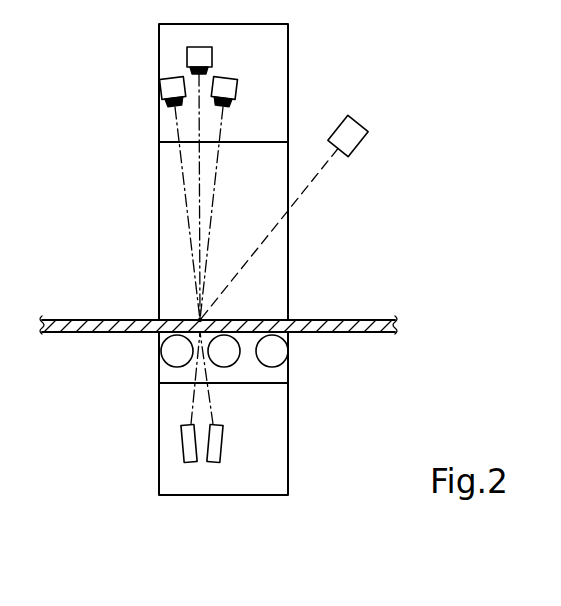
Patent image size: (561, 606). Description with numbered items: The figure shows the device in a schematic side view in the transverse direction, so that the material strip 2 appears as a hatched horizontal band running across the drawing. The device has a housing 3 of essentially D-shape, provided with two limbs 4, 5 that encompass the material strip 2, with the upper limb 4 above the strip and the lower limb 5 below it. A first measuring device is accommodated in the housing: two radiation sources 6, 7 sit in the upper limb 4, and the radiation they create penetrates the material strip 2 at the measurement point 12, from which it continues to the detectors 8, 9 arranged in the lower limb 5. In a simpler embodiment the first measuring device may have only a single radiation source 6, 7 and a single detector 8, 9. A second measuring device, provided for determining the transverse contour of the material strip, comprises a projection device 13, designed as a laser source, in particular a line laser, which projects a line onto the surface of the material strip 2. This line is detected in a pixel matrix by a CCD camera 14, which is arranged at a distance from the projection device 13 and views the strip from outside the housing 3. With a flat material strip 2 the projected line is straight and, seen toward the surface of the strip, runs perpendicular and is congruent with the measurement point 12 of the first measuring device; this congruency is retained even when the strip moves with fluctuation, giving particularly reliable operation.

The material strip 2 is at (344, 327).
The housing 3 is at (270, 273).
The limb 4 is at (270, 62).
The limb 5 is at (273, 418).
The radiation source 6 is at (172, 90).
The radiation source 7 is at (227, 90).
The detector 8 is at (188, 455).
The detector 9 is at (215, 455).
The measurement point 12 is at (200, 320).
The projection device 13 is at (192, 53).
The CCD camera 14 is at (357, 140).